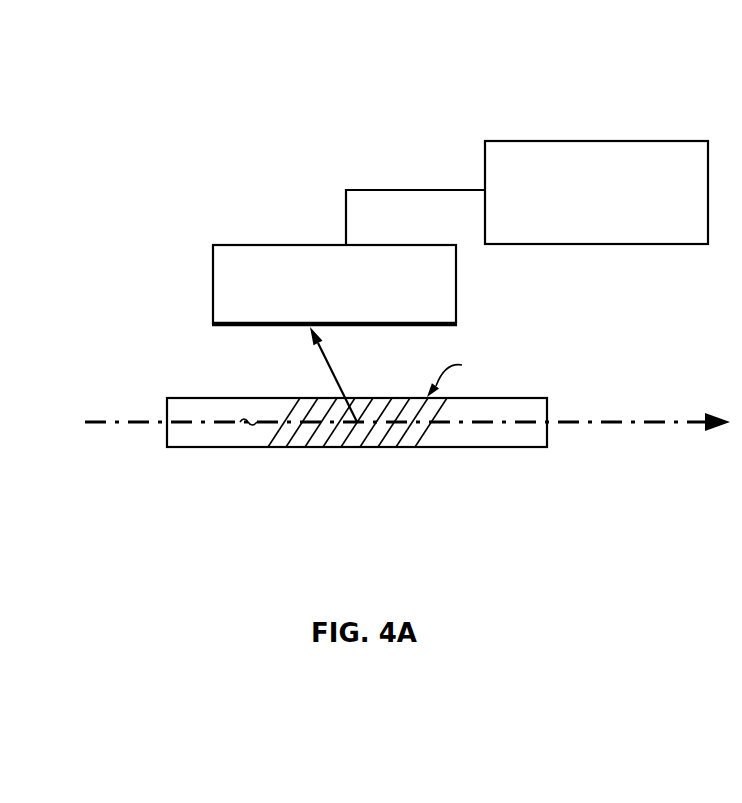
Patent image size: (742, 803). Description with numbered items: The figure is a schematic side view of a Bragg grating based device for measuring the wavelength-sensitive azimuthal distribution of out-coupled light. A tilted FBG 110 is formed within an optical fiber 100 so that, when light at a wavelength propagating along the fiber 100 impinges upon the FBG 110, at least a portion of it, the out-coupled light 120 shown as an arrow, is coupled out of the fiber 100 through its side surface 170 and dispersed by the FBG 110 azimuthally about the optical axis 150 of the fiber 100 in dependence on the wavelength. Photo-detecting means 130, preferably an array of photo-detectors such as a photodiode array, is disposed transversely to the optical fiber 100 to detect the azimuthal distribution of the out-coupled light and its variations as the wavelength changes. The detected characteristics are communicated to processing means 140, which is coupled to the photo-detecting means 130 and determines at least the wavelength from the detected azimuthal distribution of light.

The optical fiber 100 is at (497, 447).
The tilted FBG 110 is at (257, 463).
The out-coupled light 120 is at (328, 358).
The photo-detecting means 130 is at (213, 278).
The processing means 140 is at (572, 141).
The optical axis 150 is at (610, 420).
The side surface 170 is at (469, 372).